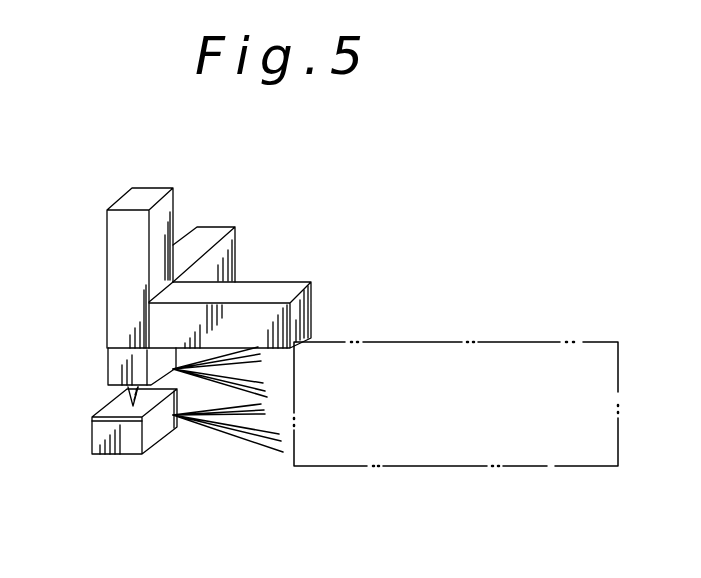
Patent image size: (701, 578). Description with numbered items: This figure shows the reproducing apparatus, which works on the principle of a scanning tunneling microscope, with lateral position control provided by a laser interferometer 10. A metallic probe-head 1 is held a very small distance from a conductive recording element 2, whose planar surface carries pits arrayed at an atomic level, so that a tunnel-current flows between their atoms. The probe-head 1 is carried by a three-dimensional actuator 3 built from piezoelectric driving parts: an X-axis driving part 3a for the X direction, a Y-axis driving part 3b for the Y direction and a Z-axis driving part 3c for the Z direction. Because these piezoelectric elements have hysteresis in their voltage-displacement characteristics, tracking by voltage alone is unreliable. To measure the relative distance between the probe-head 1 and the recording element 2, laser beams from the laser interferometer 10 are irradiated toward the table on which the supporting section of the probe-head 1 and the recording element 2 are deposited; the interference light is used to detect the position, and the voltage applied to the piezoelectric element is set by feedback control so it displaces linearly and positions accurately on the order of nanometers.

The probe-head 1 is at (120, 400).
The recording element 2 is at (112, 400).
The three-dimensional actuator 3 is at (200, 252).
The X-axis driving part 3a is at (288, 292).
The Y-axis driving part 3b is at (230, 253).
The Z-axis driving part 3c is at (121, 245).
The laser interferometer 10 is at (551, 466).